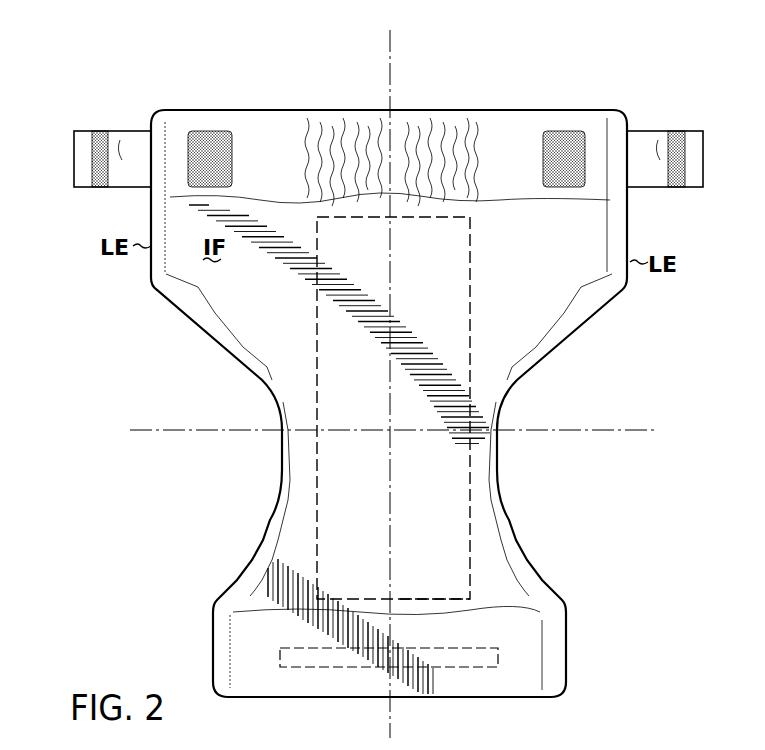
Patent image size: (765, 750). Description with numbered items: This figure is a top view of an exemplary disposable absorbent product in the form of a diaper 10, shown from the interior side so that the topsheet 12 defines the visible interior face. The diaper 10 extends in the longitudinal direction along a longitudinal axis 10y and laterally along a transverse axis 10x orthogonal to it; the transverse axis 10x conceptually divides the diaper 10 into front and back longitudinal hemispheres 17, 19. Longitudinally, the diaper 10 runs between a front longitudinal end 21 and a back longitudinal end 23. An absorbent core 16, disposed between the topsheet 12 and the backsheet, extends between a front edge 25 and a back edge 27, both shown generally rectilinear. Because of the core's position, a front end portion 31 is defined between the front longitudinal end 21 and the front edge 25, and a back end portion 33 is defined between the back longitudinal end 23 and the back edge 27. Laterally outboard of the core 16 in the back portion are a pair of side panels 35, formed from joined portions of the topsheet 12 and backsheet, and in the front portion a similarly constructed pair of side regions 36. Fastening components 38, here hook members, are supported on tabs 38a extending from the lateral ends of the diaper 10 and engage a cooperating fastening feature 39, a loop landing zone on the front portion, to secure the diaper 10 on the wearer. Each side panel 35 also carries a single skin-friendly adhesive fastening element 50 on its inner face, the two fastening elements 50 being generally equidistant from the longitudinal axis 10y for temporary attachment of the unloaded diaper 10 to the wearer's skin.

The diaper 10 is at (696, 86).
The transverse axis 10x is at (630, 428).
The longitudinal axis 10y is at (392, 78).
The topsheet 12 is at (552, 309).
The absorbent core 16 is at (473, 346).
The front longitudinal hemisphere 17 is at (561, 534).
The back longitudinal hemisphere 19 is at (601, 373).
The front longitudinal end 21 is at (489, 698).
The back longitudinal end 23 is at (487, 108).
The front edge 25 is at (452, 600).
The back edge 27 is at (470, 213).
The front end portion 31 is at (400, 641).
The back end portion 33 is at (362, 194).
The side panels 35 is at (178, 128).
The side regions 36 is at (213, 658).
The fastening components 38 is at (92, 177).
The tabs 38a is at (75, 150).
The cooperating fastening feature 39 is at (509, 657).
The fastening element 50 is at (214, 133).